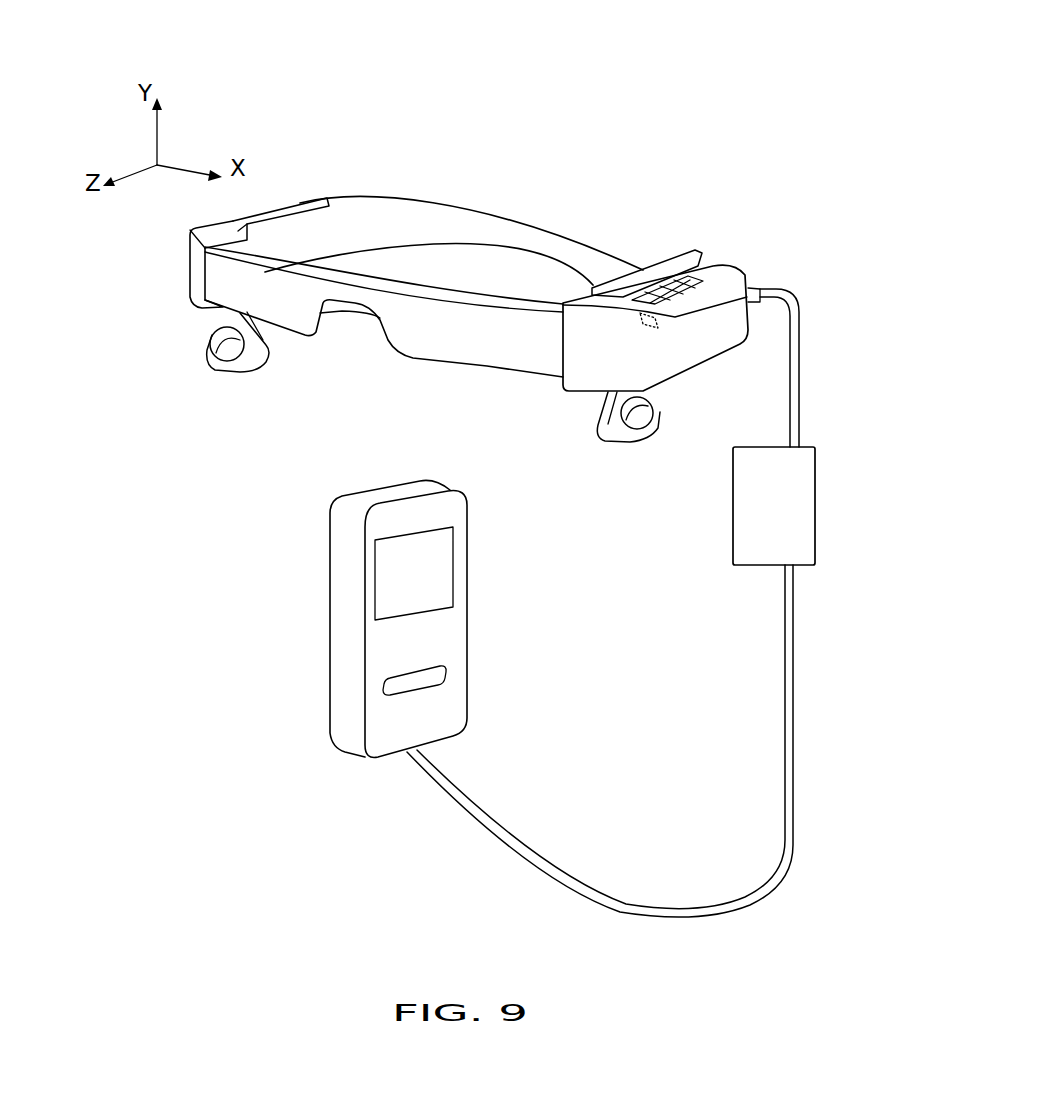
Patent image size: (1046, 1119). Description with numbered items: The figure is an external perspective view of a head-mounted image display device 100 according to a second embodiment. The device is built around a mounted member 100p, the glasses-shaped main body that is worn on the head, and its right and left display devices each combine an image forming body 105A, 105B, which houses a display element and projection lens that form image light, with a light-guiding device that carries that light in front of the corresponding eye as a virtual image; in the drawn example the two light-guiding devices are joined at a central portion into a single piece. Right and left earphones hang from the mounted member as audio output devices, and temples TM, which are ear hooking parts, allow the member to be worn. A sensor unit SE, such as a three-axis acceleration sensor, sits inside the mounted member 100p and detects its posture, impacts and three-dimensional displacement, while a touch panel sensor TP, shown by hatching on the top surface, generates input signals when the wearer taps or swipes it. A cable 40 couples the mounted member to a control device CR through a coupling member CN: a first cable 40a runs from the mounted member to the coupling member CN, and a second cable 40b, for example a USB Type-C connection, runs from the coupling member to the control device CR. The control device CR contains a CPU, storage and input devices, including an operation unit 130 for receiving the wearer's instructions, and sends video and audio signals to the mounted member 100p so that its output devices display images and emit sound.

The image display device 100 is at (468, 104).
The mounted member 100p is at (375, 167).
The temple TM is at (440, 225).
The touch panel sensor TP is at (702, 265).
The sensor unit SE is at (665, 330).
The image forming body 105A is at (197, 276).
The image forming body 105B is at (577, 320).
The cable 40 is at (832, 336).
The first cable 40a is at (798, 398).
The second cable 40b is at (784, 778).
The coupling member CN is at (740, 518).
The control device CR is at (371, 503).
The operation unit 130 is at (447, 641).